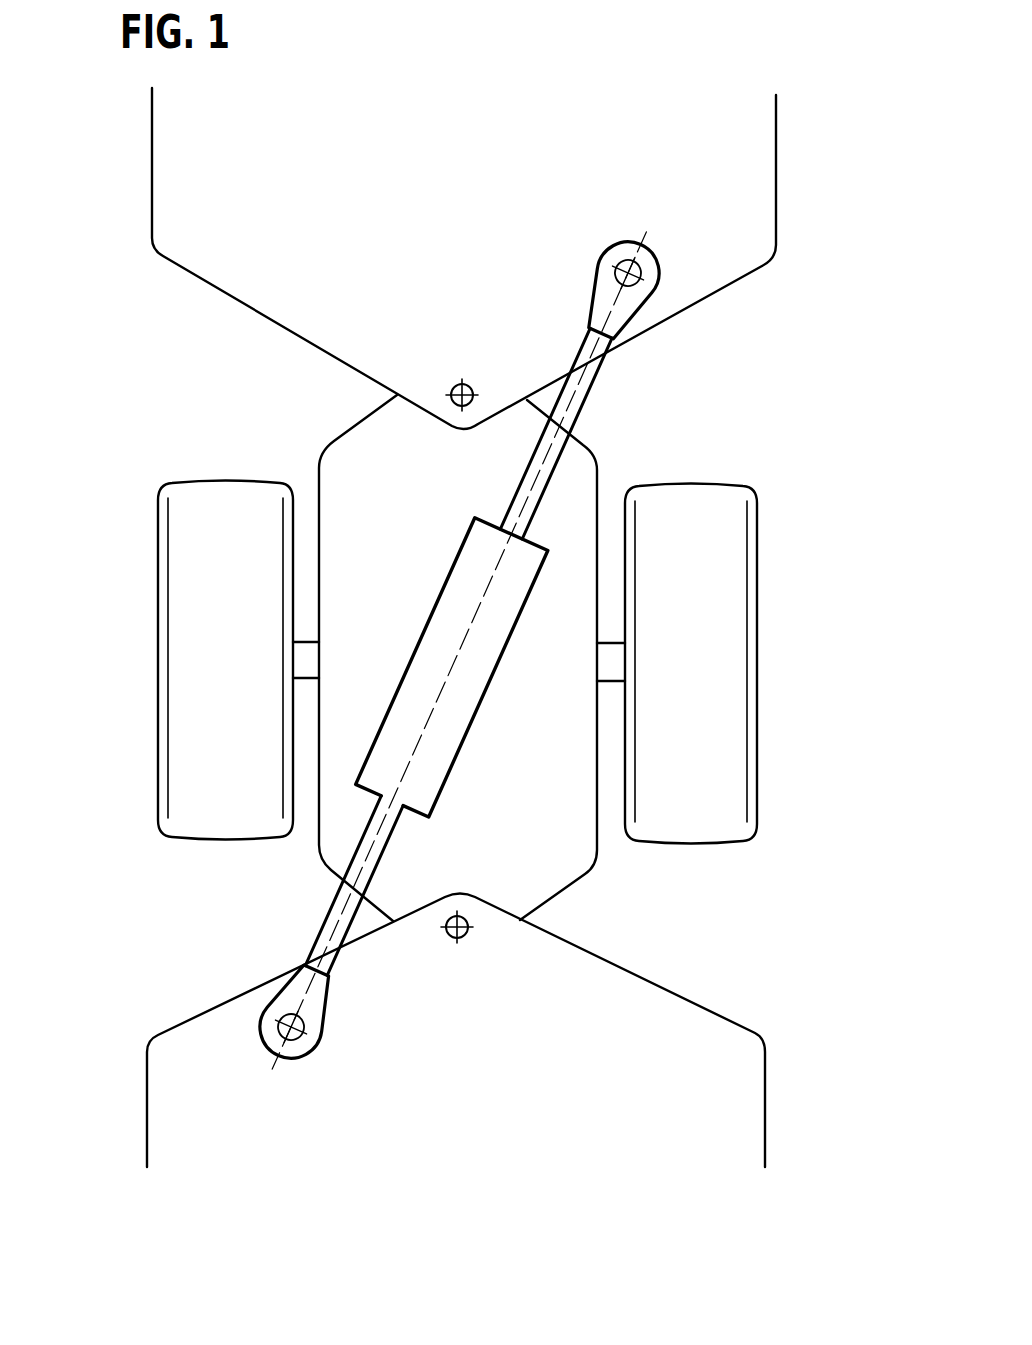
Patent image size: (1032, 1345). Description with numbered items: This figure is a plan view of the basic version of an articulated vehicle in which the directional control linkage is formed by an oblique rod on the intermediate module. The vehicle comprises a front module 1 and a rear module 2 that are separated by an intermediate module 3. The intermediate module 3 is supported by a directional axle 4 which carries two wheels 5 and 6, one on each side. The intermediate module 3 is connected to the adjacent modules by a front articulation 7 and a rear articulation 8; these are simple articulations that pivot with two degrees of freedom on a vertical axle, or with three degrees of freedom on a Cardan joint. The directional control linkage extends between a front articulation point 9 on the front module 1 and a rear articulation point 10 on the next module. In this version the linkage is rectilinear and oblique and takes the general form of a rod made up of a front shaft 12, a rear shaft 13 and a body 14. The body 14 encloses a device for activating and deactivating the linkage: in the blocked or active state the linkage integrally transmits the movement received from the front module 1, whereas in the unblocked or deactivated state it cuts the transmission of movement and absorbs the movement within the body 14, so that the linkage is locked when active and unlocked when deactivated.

The front module 1 is at (215, 248).
The rear module 2 is at (720, 1072).
The intermediate module 3 is at (540, 850).
The directional axle 4 is at (611, 658).
The wheel 5 is at (192, 657).
The wheel 6 is at (682, 740).
The front articulation 7 is at (440, 380).
The rear articulation 8 is at (490, 953).
The front articulation point 9 is at (641, 268).
The rear articulation point 10 is at (280, 1027).
The front shaft 12 is at (577, 387).
The rear shaft 13 is at (320, 930).
The body 14 is at (545, 621).